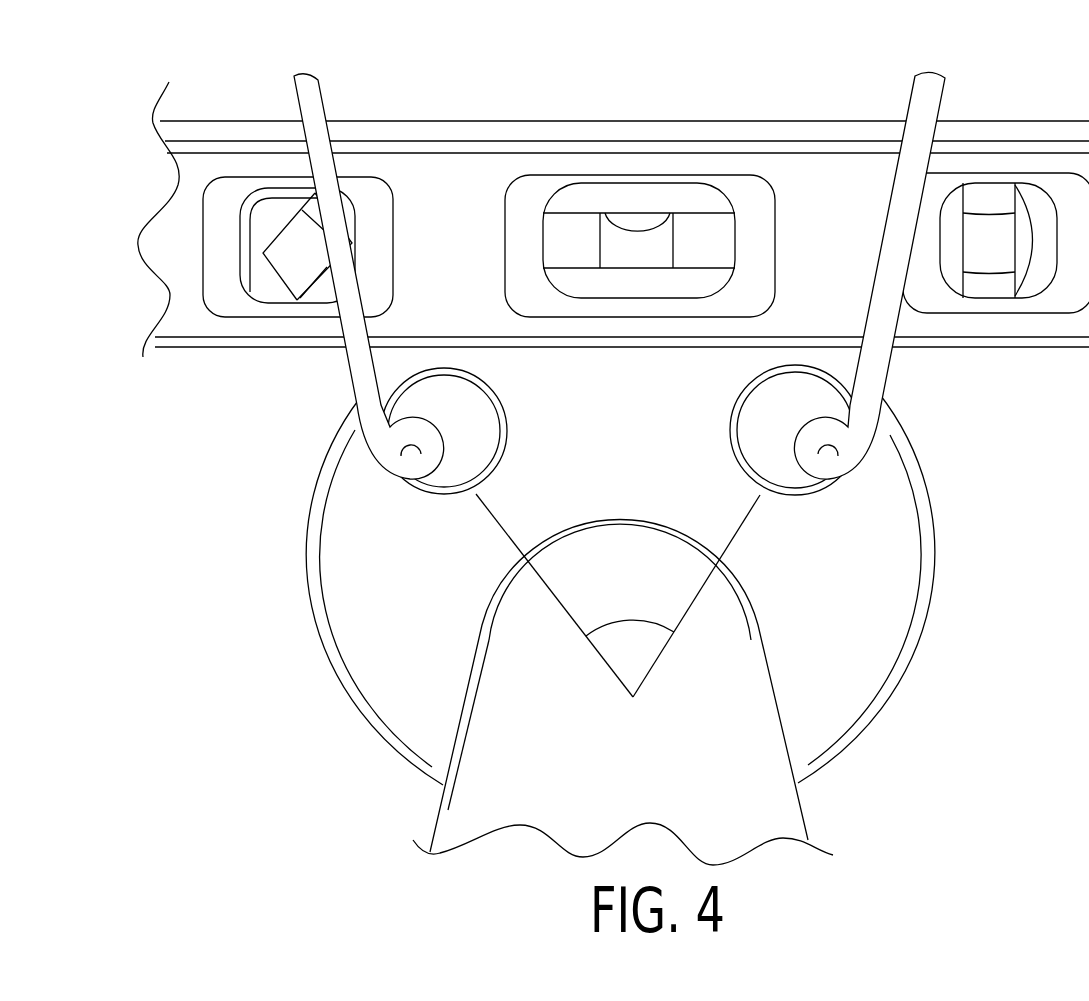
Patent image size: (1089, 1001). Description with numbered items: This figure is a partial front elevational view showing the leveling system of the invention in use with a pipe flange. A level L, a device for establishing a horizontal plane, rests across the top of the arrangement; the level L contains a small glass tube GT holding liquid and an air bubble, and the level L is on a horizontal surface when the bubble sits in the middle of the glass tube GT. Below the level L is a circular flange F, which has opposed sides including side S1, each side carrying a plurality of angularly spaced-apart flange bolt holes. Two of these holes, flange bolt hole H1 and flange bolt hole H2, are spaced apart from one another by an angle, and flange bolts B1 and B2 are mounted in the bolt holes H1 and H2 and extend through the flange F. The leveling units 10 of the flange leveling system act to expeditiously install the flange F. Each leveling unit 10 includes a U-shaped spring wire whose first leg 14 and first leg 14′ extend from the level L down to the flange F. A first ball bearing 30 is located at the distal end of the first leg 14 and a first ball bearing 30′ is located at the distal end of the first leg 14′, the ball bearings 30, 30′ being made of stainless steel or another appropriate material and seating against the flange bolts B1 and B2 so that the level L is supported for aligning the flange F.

The leveling unit 10 is at (626, 268).
The first leg 14 is at (310, 103).
The first leg 14′ is at (927, 110).
The first ball bearing 30 is at (497, 402).
The first ball bearing 30′ is at (735, 407).
The flange bolt B1 is at (447, 365).
The flange bolt B2 is at (803, 362).
The glass tube GT is at (565, 240).
The level L is at (812, 185).
The flange bolt hole H1 is at (497, 467).
The flange bolt hole H2 is at (735, 462).
The side S1 is at (857, 609).
The circular flange F is at (867, 641).